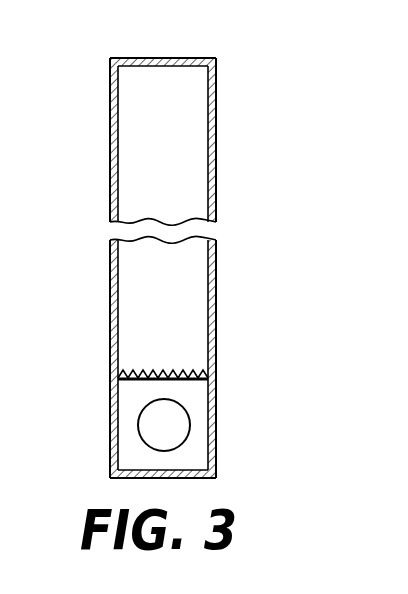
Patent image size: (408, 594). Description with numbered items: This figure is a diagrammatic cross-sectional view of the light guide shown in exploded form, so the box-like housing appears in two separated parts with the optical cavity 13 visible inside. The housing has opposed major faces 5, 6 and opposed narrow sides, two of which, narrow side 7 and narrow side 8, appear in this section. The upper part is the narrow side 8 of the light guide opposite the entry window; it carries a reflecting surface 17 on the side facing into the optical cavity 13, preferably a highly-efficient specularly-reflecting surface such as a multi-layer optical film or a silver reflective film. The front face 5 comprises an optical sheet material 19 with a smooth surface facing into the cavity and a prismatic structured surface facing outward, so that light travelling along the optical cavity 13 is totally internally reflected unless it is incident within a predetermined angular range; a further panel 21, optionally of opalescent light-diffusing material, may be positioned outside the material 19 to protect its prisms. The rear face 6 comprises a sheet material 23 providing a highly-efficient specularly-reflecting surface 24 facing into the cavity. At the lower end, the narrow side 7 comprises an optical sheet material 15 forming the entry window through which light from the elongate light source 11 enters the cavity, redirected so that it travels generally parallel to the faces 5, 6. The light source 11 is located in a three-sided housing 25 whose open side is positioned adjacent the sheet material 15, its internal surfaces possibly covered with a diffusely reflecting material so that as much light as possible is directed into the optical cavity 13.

The major face 5 is at (102, 140).
The major face 6 is at (222, 153).
The narrow side 8 is at (164, 44).
The reflecting surface 17 is at (183, 67).
The further panel 21 is at (110, 270).
The optical sheet material 19 is at (110, 316).
The sheet material 23 is at (216, 268).
The specularly-reflecting surface 24 is at (188, 274).
The optical cavity 13 is at (196, 341).
The optical sheet material 15 is at (190, 366).
The narrow side 7 is at (125, 393).
The three-sided housing 25 is at (110, 436).
The elongate light source 11 is at (186, 425).